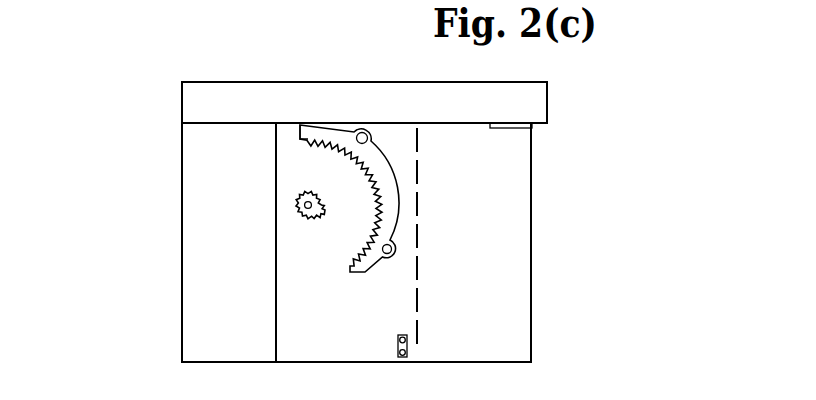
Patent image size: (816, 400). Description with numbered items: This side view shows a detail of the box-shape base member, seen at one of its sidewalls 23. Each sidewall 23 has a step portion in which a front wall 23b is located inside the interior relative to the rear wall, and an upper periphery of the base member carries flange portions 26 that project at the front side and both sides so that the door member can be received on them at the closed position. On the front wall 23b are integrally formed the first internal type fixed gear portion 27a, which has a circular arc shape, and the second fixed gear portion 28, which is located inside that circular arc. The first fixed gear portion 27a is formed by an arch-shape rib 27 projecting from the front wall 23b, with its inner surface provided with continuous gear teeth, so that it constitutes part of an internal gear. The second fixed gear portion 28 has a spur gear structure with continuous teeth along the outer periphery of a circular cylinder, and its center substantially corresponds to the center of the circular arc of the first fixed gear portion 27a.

The flange portion 26 is at (530, 98).
The sidewall 23 is at (289, 242).
The front wall 23b is at (513, 324).
The arch-shape rib 27 is at (338, 130).
The first internal type fixed gear portion 27a is at (312, 149).
The second fixed gear portion 28 is at (291, 203).